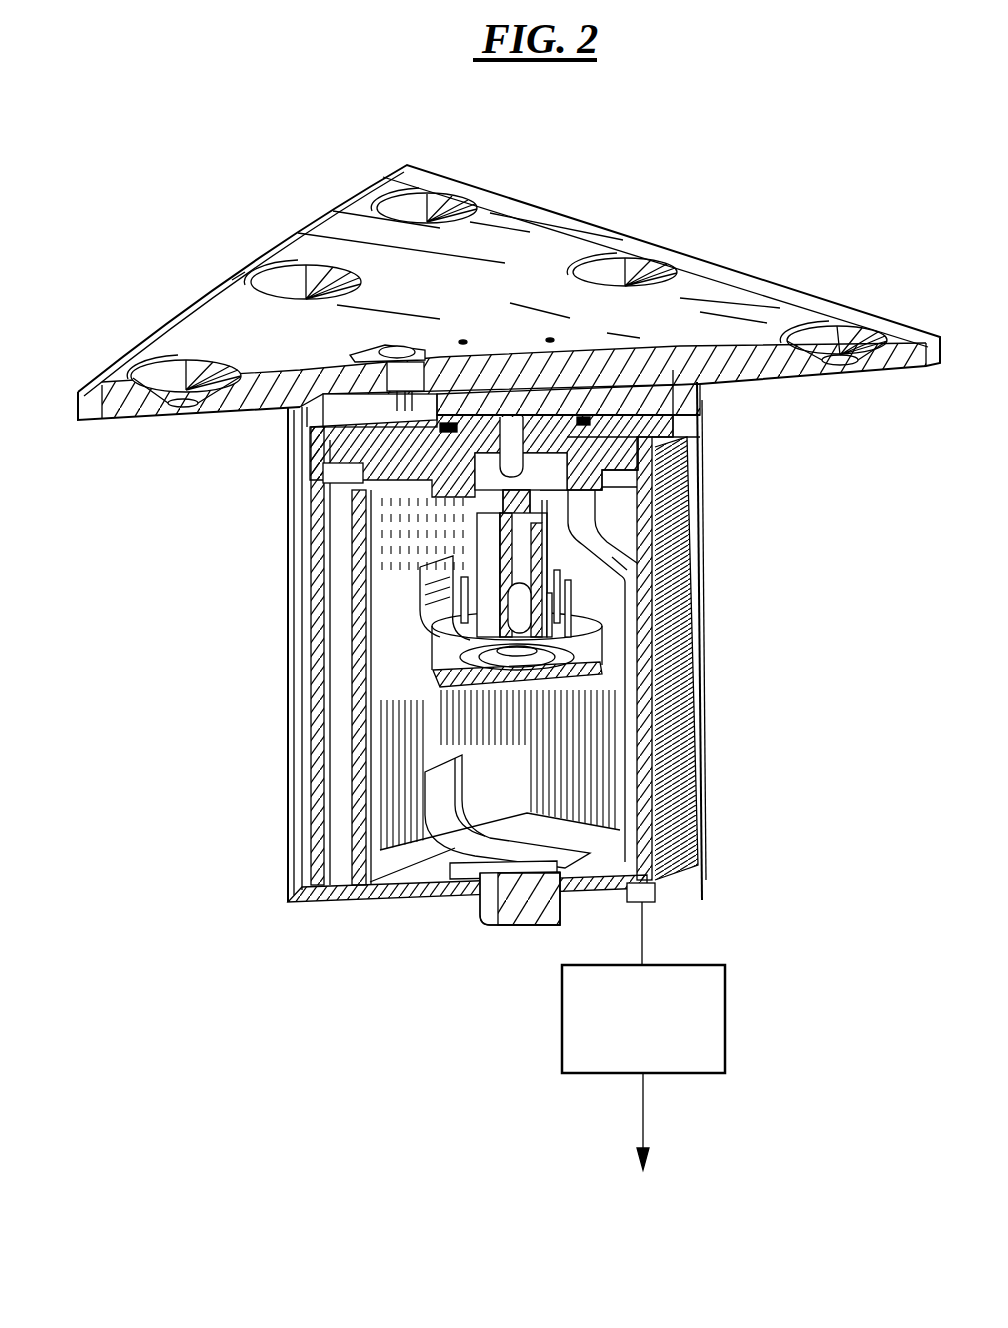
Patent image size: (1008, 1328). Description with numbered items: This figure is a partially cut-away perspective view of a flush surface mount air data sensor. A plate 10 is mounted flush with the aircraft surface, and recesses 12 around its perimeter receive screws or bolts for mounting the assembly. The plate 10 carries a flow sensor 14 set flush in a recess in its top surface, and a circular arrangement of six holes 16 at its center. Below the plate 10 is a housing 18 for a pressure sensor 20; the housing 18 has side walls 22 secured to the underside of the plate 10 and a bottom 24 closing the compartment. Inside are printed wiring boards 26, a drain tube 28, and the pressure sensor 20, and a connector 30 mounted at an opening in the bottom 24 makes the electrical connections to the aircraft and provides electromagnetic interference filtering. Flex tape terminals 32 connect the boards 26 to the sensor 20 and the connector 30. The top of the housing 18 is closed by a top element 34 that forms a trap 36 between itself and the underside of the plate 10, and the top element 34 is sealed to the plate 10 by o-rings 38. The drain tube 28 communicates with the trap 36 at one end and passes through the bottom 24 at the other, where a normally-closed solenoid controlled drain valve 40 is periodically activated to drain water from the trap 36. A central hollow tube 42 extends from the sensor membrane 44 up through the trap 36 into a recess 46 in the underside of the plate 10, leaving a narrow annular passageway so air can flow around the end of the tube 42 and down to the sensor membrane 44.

The plate 10 is at (560, 218).
The recesses 12 is at (597, 273).
The flow sensor 14 is at (373, 350).
The holes 16 is at (505, 330).
The housing 18 is at (690, 662).
The pressure sensor 20 is at (432, 666).
The side walls 22 is at (287, 668).
The bottom 24 is at (387, 897).
The printed wiring boards 26 is at (363, 795).
The drain tube 28 is at (653, 593).
The connector 30 is at (520, 925).
The flex tape terminals 32 is at (432, 575).
The top element 34 is at (590, 456).
The trap 36 is at (467, 303).
The o-rings 38 is at (590, 415).
The drain valve 40 is at (717, 1040).
The central hollow tube 42 is at (478, 442).
The sensor membrane 44 is at (513, 687).
The recess 46 is at (547, 357).